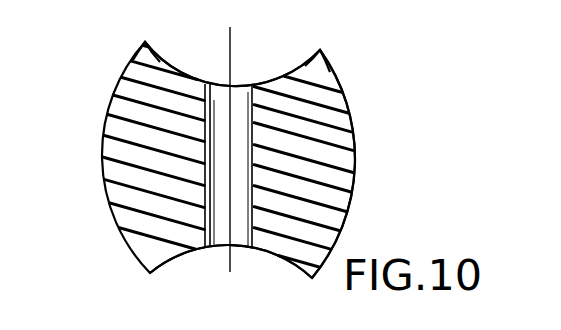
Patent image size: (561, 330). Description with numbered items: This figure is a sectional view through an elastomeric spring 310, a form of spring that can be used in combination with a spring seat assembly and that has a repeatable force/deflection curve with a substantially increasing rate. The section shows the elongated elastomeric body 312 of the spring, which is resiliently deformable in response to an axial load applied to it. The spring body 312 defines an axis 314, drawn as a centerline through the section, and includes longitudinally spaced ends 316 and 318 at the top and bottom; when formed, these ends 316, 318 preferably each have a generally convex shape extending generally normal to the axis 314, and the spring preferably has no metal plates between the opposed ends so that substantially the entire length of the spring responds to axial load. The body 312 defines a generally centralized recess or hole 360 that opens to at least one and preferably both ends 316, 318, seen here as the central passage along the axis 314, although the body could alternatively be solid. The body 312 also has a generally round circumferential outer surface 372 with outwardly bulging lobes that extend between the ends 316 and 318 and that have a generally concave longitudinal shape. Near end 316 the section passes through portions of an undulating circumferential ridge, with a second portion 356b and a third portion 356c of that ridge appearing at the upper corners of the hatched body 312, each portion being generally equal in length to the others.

The spring 310 is at (76, 147).
The elongated elastomeric body 312 is at (331, 167).
The axis 314 is at (231, 31).
The end 316 is at (301, 58).
The end 318 is at (186, 256).
The second portion of circumferential ridge 356b is at (323, 50).
The third portion of circumferential ridge 356c is at (142, 44).
The centralized recess or hole 360 is at (218, 88).
The circumferential outer surface 372 is at (350, 116).